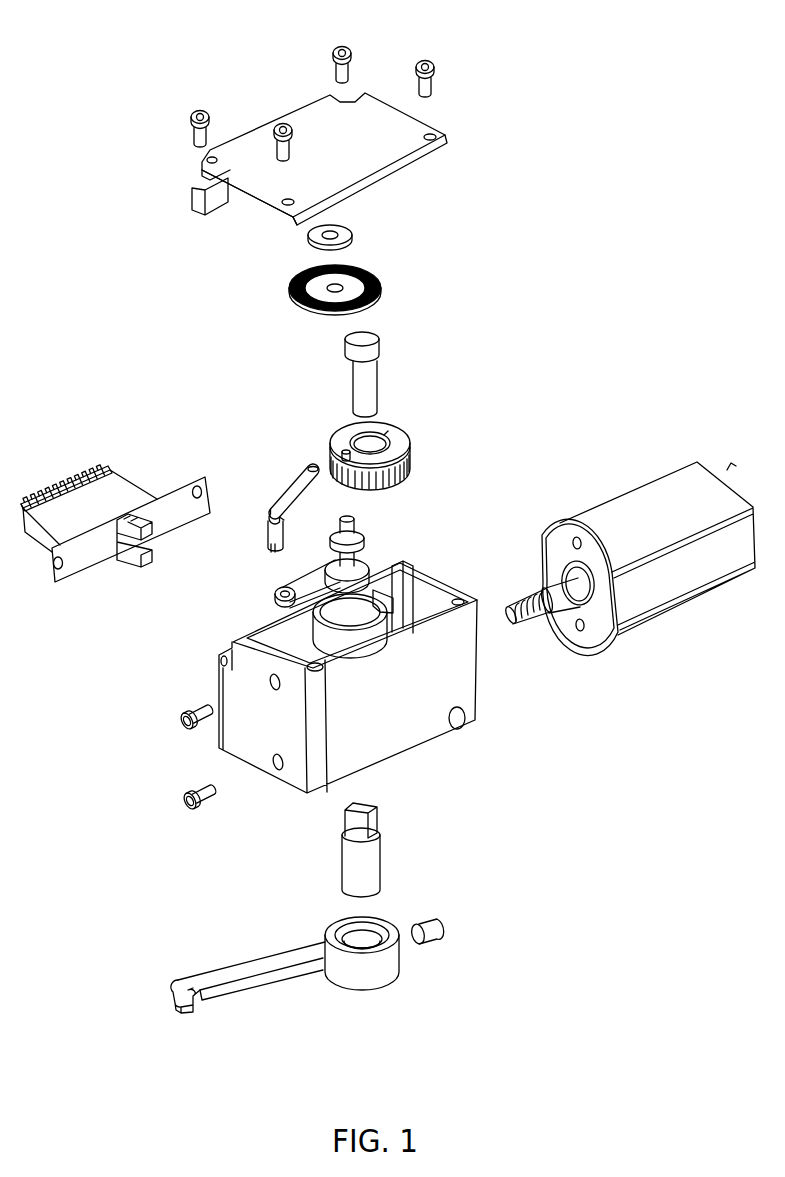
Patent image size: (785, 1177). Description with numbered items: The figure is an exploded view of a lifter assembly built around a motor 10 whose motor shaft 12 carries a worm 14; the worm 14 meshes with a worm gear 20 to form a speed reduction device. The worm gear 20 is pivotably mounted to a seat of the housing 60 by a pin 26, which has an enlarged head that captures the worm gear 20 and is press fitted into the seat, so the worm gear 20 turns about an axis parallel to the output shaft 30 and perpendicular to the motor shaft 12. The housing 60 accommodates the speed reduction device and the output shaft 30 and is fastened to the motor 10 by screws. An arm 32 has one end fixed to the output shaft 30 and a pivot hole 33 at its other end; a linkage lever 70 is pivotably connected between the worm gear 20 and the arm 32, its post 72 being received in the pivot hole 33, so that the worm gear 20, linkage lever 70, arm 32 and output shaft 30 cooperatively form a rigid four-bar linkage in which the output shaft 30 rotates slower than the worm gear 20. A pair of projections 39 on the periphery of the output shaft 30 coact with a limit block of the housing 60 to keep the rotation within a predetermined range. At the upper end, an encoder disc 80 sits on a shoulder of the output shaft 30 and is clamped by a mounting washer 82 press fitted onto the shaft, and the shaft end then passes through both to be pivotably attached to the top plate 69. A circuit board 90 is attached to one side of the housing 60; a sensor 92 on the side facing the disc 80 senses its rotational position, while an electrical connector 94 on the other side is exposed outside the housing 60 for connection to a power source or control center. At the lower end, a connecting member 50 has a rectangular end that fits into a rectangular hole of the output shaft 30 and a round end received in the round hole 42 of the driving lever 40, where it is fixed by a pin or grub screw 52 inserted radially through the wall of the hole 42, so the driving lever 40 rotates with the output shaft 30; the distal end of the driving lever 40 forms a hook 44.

The motor 10 is at (718, 562).
The motor shaft 12 is at (565, 592).
The worm 14 is at (542, 615).
The worm gear 20 is at (393, 447).
The pin 26 is at (372, 373).
The output shaft 30 is at (352, 560).
The arm 32 is at (312, 611).
The pivot hole 33 is at (283, 590).
The projections 39 is at (400, 600).
The driving lever 40 is at (292, 970).
The round hole 42 is at (387, 970).
The hook 44 is at (188, 1013).
The connecting member 50 is at (372, 862).
The pin or grub screw 52 is at (428, 940).
The housing 60 is at (423, 683).
The top plate 69 is at (307, 125).
The linkage lever 70 is at (298, 482).
The post 72 is at (270, 527).
The encoder disc 80 is at (388, 289).
The mounting washer 82 is at (355, 232).
The circuit board 90 is at (178, 500).
The sensor 92 is at (125, 555).
The electrical connector 94 is at (78, 505).